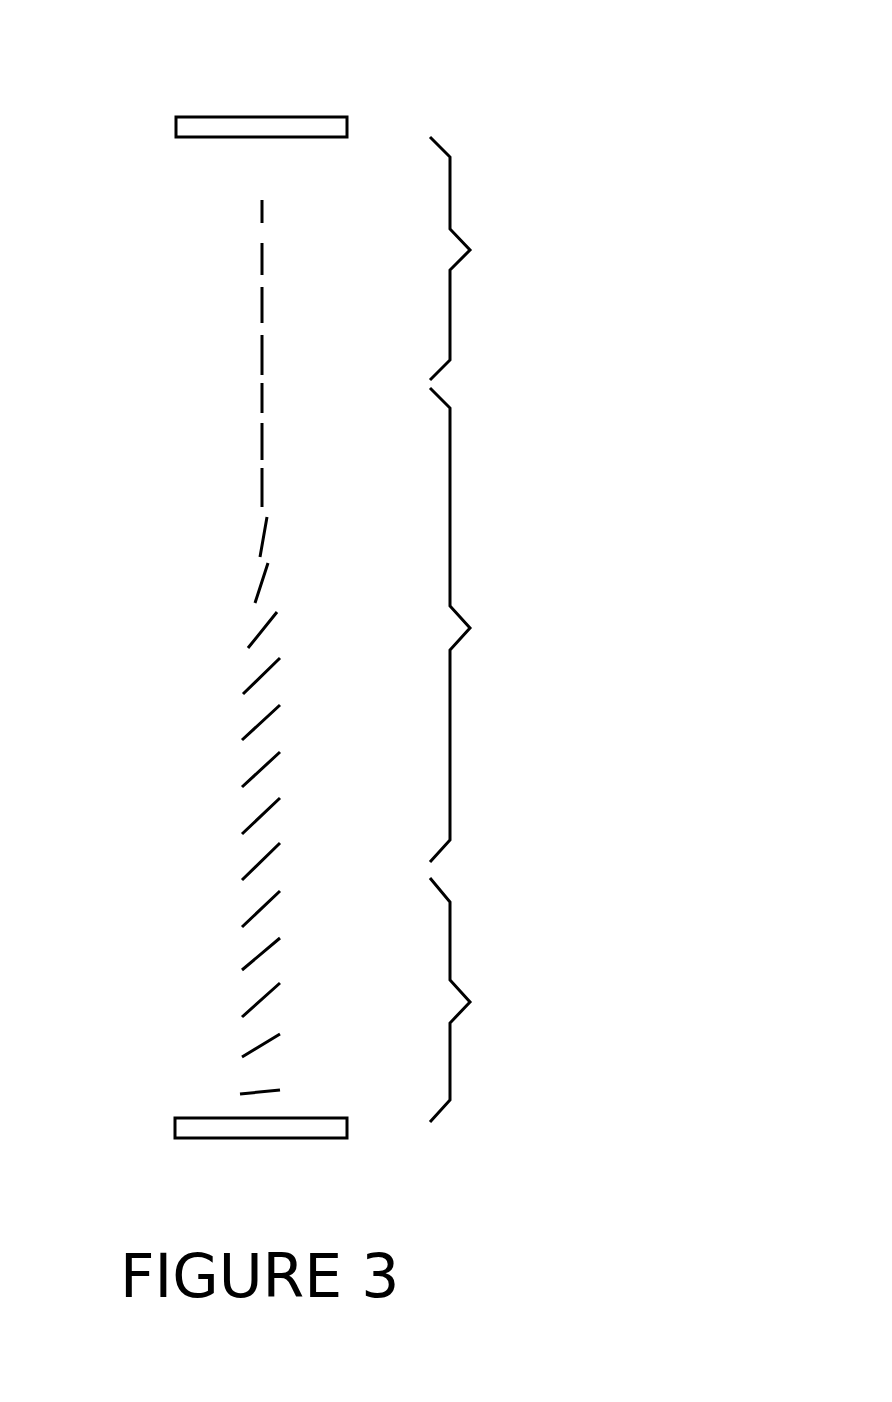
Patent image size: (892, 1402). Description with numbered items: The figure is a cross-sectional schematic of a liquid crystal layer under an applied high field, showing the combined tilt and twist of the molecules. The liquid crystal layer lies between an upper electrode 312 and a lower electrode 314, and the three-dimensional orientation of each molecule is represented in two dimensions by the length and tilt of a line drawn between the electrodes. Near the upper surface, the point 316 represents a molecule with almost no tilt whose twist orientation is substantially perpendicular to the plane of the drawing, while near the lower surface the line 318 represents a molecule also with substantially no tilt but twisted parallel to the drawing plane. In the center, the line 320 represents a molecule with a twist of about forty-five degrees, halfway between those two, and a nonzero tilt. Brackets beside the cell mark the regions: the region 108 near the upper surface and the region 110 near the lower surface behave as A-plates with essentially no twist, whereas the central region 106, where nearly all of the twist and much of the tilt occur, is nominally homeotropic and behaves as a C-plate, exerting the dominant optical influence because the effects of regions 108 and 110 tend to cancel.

The electrode 312 is at (258, 117).
The electrode 314 is at (252, 1138).
The point 316 is at (262, 162).
The line 318 is at (245, 1090).
The line 320 is at (258, 630).
The region 108 is at (450, 207).
The central region 106 is at (450, 575).
The region 110 is at (450, 962).